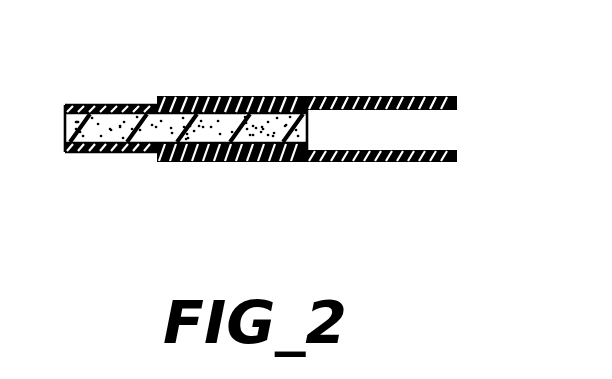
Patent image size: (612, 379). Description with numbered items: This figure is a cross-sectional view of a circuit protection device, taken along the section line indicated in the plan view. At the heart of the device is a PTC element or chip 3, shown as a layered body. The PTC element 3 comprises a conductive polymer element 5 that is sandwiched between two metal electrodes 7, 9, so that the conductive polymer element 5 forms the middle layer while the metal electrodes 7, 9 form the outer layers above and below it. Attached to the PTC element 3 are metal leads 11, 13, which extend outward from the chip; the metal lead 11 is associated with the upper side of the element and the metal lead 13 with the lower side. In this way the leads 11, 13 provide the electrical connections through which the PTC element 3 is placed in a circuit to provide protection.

The PTC element 3 is at (120, 154).
The conductive polymer element 5 is at (125, 118).
The metal electrode 7 is at (243, 96).
The metal electrode 9 is at (247, 152).
The metal lead 11 is at (422, 96).
The metal lead 13 is at (420, 160).